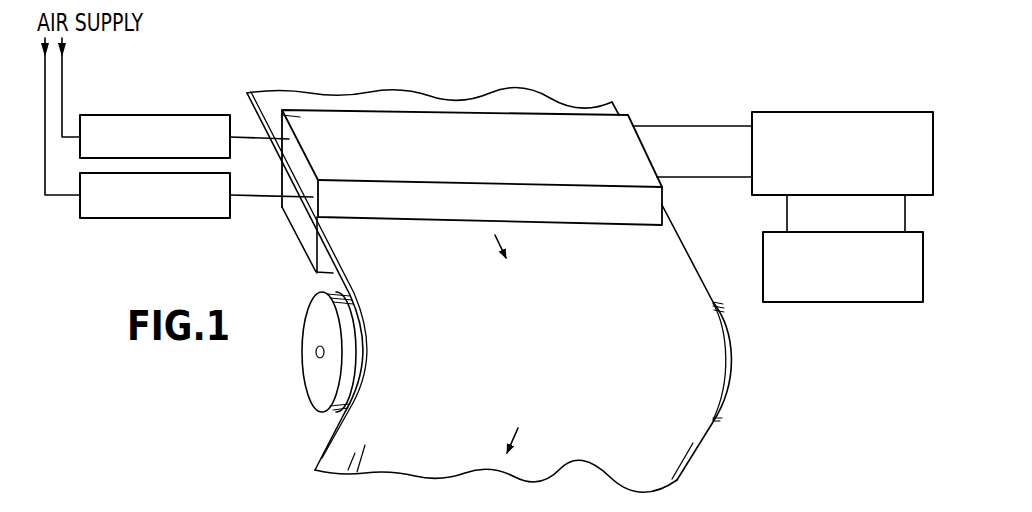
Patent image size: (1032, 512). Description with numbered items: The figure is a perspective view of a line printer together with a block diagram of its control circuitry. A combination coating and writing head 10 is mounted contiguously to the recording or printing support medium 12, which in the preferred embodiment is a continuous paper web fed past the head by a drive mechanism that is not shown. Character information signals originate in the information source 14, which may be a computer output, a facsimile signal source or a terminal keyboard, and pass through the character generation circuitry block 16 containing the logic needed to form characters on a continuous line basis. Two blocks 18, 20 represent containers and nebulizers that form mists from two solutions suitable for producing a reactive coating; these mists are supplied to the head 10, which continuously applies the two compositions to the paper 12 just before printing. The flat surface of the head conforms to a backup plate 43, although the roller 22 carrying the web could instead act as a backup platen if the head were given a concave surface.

The combination coating and writing head 10 is at (613, 132).
The recording or printing support medium 12 is at (683, 270).
The information source 14 is at (873, 297).
The character generation circuitry block 16 is at (786, 115).
The solution container and nebulizer 18 is at (135, 118).
The solution container and nebulizer 20 is at (147, 215).
The roller 22 is at (310, 348).
The backup plate 43 is at (300, 223).